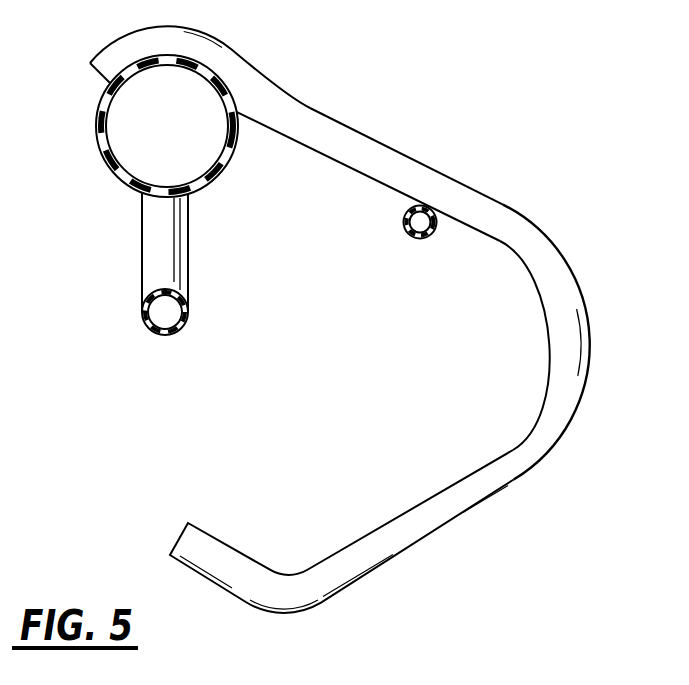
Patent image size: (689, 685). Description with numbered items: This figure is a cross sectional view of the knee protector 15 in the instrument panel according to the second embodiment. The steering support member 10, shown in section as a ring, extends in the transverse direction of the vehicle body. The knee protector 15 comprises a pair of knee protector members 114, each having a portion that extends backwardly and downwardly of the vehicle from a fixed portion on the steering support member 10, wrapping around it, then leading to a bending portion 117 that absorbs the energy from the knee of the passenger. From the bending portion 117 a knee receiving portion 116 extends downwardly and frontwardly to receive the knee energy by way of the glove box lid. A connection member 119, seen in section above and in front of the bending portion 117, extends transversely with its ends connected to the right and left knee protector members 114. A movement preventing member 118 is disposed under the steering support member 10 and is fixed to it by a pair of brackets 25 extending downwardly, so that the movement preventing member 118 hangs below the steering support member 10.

The steering support member 10 is at (97, 125).
The knee protector 15 is at (340, 312).
The bracket 25 is at (152, 236).
The knee protector member 114 is at (380, 146).
The knee receiving portion 116 is at (448, 521).
The bending portion 117 is at (560, 346).
The movement preventing member 118 is at (187, 318).
The connection member 119 is at (410, 236).